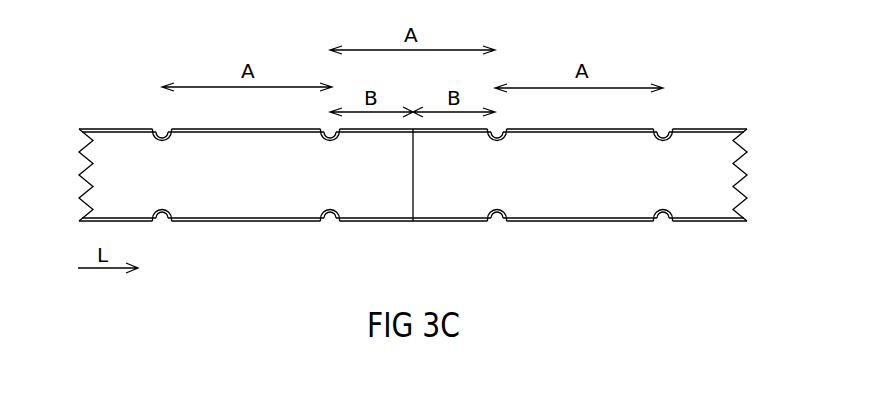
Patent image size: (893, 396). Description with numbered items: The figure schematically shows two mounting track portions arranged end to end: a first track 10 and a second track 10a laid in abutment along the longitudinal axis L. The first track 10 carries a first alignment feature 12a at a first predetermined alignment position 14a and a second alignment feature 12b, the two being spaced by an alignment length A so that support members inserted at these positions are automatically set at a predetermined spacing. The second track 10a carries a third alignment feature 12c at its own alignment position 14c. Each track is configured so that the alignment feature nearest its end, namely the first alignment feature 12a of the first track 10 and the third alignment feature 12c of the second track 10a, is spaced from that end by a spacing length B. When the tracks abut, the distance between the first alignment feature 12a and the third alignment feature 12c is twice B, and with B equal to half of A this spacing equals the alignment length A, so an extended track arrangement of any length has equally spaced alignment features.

The track 10 is at (409, 129).
The second track 10a is at (85, 109).
The first alignment feature 12a is at (501, 140).
The second alignment feature 12b is at (658, 140).
The third alignment feature 12c is at (325, 141).
The first predetermined alignment position 14a is at (489, 196).
The third alignment position 14c is at (338, 196).